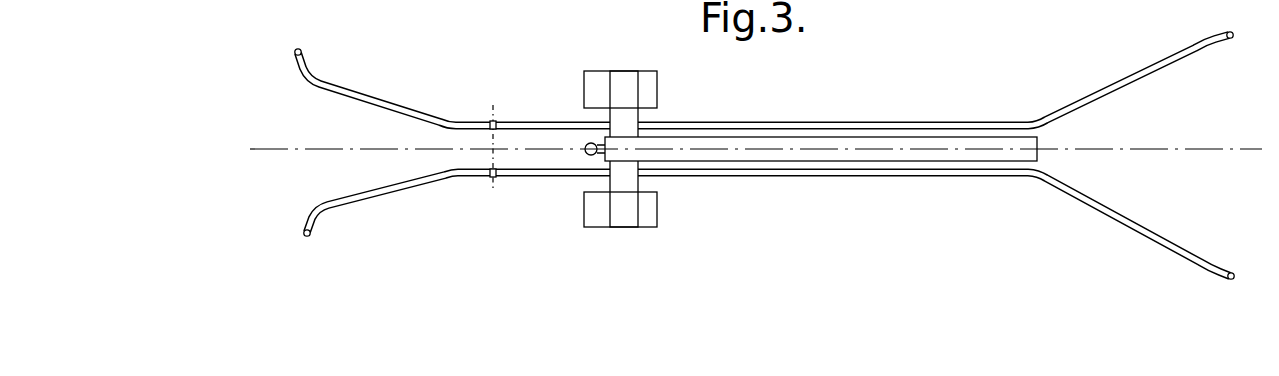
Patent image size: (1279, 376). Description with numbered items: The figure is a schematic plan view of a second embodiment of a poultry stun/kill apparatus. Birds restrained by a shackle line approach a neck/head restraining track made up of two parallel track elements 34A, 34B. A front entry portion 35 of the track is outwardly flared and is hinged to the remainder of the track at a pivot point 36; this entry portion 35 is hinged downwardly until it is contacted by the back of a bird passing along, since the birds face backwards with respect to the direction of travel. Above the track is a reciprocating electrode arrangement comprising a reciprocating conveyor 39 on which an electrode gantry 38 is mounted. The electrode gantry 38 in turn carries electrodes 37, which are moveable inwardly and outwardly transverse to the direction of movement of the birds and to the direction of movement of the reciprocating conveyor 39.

The track element 34A is at (1133, 81).
The track element 34B is at (1128, 225).
The front entry portion 35 is at (327, 102).
The pivot point 36 is at (493, 118).
The electrodes 37 is at (584, 83).
The electrode gantry 38 is at (628, 117).
The reciprocating conveyor 39 is at (775, 142).